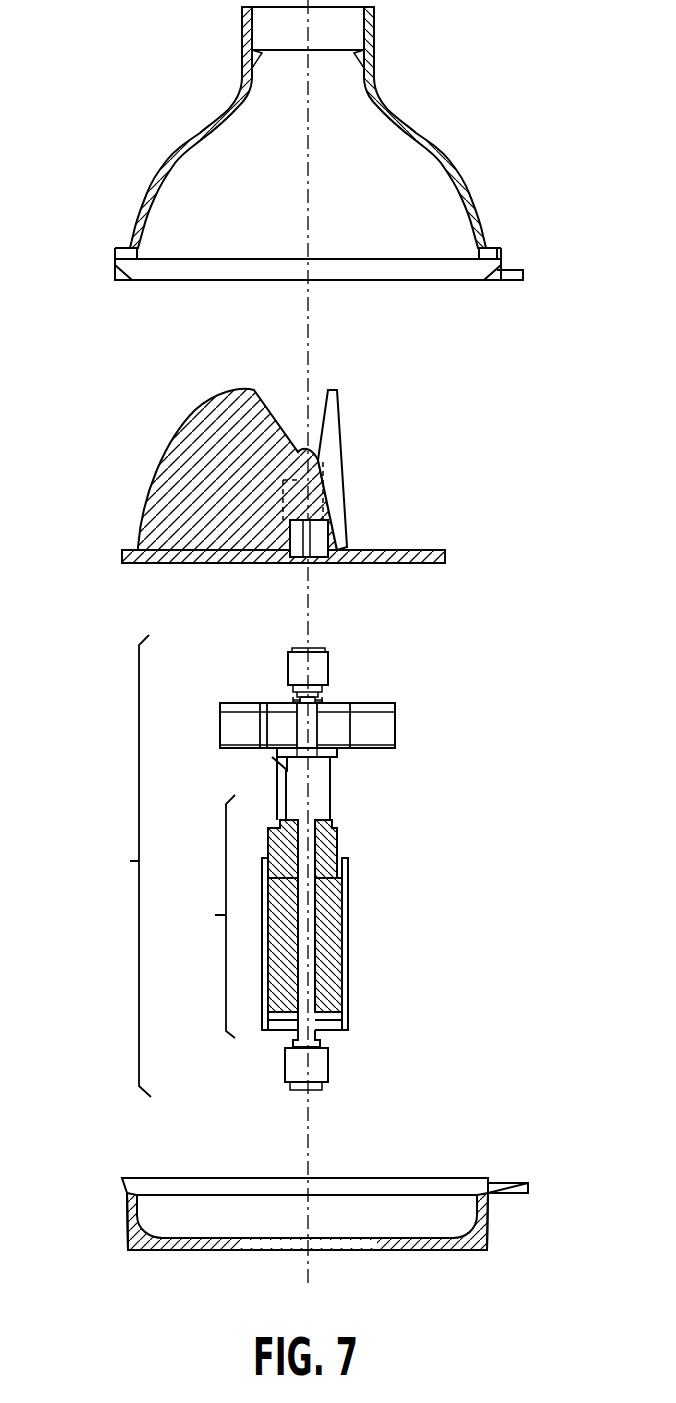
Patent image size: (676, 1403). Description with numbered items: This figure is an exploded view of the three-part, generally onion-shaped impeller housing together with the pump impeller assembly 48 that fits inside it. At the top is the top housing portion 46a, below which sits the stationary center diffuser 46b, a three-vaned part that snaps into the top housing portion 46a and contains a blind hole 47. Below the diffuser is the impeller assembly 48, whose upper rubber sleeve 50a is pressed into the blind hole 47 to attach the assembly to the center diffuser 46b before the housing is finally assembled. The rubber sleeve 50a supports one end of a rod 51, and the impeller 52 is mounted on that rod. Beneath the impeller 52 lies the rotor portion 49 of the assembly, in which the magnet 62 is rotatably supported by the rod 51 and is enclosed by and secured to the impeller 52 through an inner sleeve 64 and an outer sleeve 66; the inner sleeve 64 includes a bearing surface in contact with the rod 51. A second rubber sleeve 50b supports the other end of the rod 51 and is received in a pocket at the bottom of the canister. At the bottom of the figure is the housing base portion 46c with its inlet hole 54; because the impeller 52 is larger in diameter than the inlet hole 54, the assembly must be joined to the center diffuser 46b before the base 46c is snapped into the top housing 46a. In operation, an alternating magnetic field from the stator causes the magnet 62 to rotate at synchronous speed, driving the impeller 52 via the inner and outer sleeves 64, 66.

The top housing portion 46a is at (447, 148).
The stationary center diffuser 46b is at (342, 458).
The blind hole 47 is at (317, 550).
The pump impeller assembly 48 is at (130, 861).
The rotor portion 49 is at (214, 915).
The rubber sleeve 50a is at (320, 663).
The rod 51 is at (323, 700).
The impeller 52 is at (385, 733).
The magnet 62 is at (328, 995).
The inner sleeve 64 is at (320, 843).
The outer sleeve 66 is at (347, 865).
The rubber sleeve 50b is at (328, 1068).
The housing base portion 46c is at (483, 1222).
The inlet hole 54 is at (253, 1245).